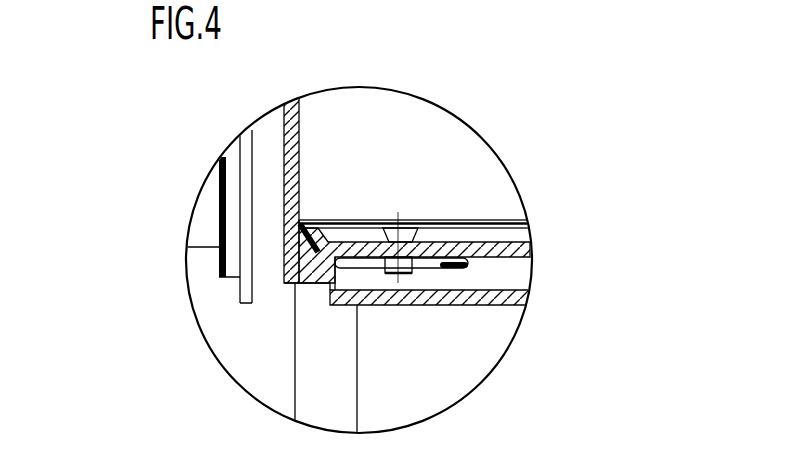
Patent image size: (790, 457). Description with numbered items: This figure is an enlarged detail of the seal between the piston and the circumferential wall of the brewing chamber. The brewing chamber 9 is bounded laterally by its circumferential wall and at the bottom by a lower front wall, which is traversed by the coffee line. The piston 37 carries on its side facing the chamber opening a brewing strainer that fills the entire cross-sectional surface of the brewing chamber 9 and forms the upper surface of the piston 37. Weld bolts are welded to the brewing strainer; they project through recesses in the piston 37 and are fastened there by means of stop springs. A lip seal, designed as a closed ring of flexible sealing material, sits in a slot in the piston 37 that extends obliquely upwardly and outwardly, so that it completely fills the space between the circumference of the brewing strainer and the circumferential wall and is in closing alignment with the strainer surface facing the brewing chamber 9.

The brewing chamber 9 is at (410, 167).
The piston 37 is at (575, 267).